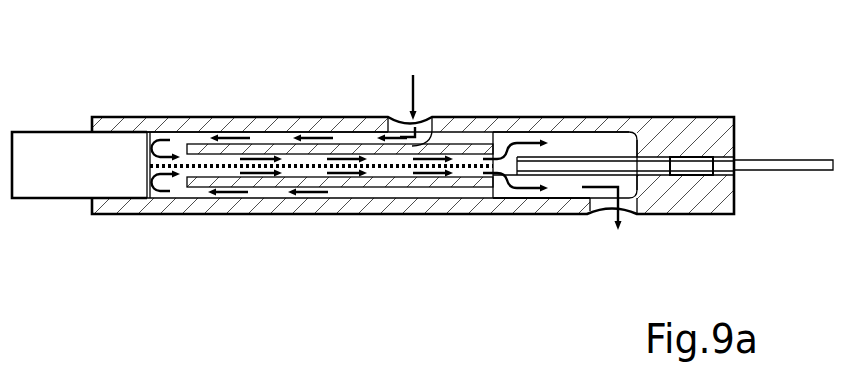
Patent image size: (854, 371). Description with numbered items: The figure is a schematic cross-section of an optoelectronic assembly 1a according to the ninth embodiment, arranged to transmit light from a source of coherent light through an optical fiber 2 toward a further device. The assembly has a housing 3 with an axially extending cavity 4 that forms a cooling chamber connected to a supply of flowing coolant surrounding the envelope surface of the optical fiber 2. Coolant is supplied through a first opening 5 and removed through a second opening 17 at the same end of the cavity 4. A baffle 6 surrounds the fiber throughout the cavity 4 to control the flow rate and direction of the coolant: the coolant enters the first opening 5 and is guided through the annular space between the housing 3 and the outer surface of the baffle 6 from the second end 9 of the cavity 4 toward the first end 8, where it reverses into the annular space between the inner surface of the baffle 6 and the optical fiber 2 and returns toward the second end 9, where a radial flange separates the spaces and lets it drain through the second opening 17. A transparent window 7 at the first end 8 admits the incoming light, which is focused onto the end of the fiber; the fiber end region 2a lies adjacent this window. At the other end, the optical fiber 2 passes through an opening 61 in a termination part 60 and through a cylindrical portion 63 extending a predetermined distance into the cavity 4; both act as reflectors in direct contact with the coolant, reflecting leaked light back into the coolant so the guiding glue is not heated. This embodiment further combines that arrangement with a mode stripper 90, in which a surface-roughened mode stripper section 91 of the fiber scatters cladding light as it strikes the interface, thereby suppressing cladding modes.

The optoelectronic assembly 1a is at (317, 98).
The optical fiber 2 is at (753, 167).
The electrode end / lower return flow 2a is at (163, 190).
The housing 3 is at (223, 126).
The cavity 4 is at (358, 138).
The first opening 5 is at (425, 128).
The baffle 6 is at (268, 148).
The transparent window 7 is at (33, 157).
The first end 8 is at (167, 148).
The second end 9 is at (590, 145).
The second opening 17 is at (607, 218).
The termination part 60 is at (728, 148).
The opening 61 is at (730, 160).
The cylindrical portion 63 is at (557, 173).
The mode stripper 90 is at (302, 173).
The mode stripper section 91 is at (227, 173).